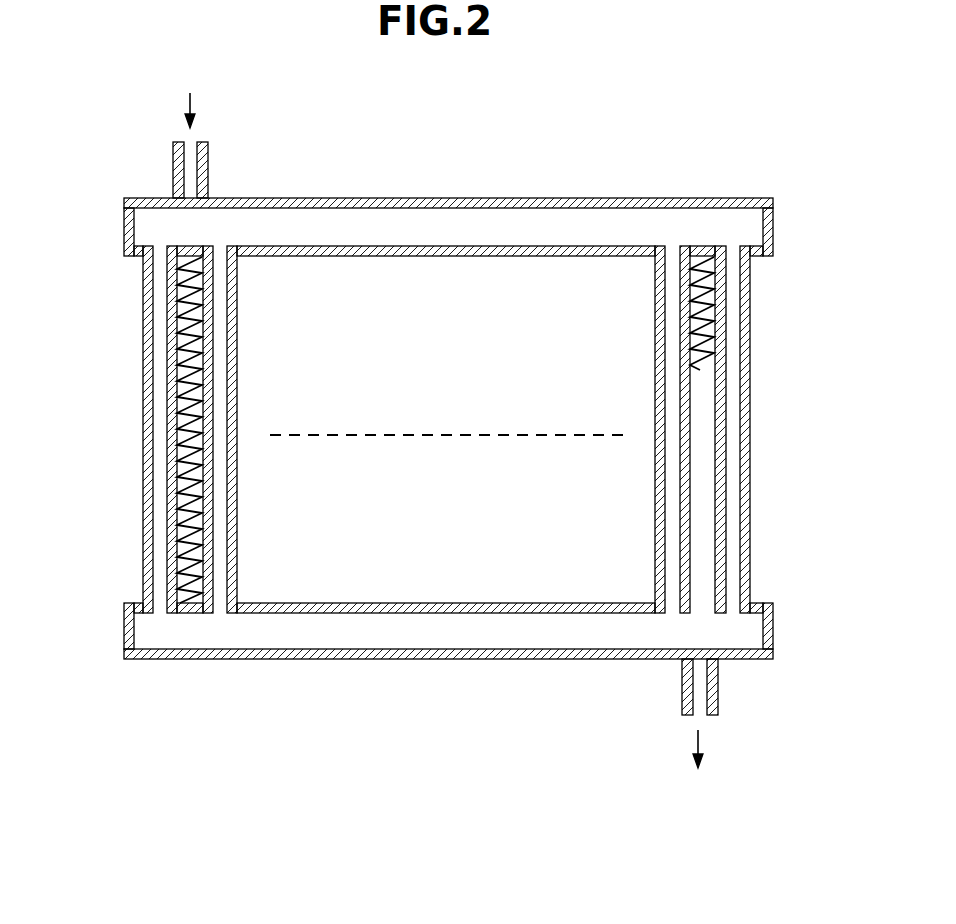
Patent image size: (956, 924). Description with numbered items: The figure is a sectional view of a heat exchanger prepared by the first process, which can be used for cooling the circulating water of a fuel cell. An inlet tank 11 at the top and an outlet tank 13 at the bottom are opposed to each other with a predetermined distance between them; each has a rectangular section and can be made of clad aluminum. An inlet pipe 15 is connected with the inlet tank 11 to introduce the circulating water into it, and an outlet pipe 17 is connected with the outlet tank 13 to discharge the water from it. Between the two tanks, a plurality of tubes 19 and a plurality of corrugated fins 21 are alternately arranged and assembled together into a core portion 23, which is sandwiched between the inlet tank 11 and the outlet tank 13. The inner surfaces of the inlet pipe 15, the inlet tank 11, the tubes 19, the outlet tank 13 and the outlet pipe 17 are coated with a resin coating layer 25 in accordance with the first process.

The inlet tank 11 is at (698, 198).
The outlet tank 13 is at (745, 660).
The inlet pipe 15 is at (210, 162).
The outlet pipe 17 is at (682, 703).
The tubes 19 is at (143, 518).
The corrugated fins 21 is at (713, 312).
The core portion 23 is at (131, 384).
The resin coating layer 25 is at (145, 212).